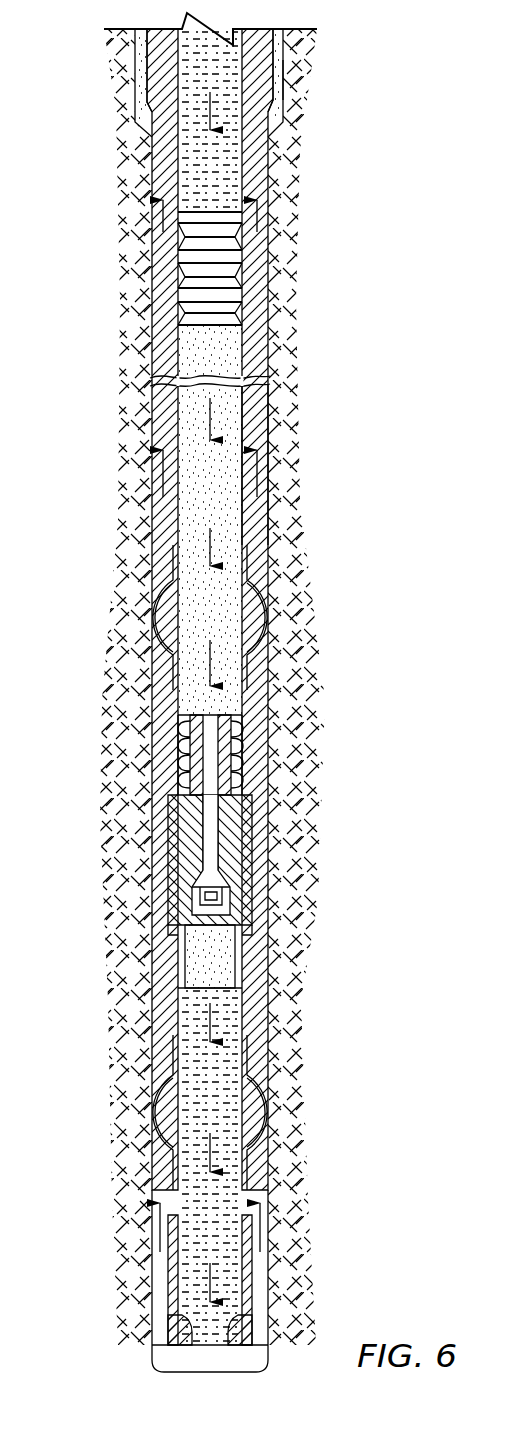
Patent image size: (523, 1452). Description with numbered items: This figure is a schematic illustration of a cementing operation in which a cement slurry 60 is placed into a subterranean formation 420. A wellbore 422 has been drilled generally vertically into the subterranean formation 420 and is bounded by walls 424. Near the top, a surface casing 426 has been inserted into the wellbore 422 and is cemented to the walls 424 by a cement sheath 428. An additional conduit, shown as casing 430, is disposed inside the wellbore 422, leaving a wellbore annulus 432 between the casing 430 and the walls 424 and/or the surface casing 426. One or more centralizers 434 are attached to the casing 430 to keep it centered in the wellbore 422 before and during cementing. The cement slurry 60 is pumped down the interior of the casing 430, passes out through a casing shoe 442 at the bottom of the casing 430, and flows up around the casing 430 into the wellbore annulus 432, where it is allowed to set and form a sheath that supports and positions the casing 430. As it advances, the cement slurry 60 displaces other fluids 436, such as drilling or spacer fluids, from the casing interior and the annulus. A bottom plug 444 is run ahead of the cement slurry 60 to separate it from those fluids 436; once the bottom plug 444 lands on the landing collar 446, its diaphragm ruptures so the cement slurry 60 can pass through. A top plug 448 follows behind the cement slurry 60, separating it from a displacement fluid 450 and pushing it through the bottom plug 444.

The cement slurry 60 is at (246, 400).
The subterranean formation 420 is at (322, 758).
The wellbore 422 is at (280, 561).
The walls 424 is at (270, 325).
The surface casing 426 is at (279, 62).
The cement sheath 428 is at (285, 82).
The casing 430 is at (262, 425).
The wellbore annulus 432 is at (160, 507).
The centralizers 434 is at (160, 1108).
The fluids 436 is at (218, 1012).
The casing shoe 442 is at (168, 1262).
The bottom plug 444 is at (182, 726).
The landing collar 446 is at (156, 808).
The top plug 448 is at (158, 260).
The displacement fluid 450 is at (215, 116).